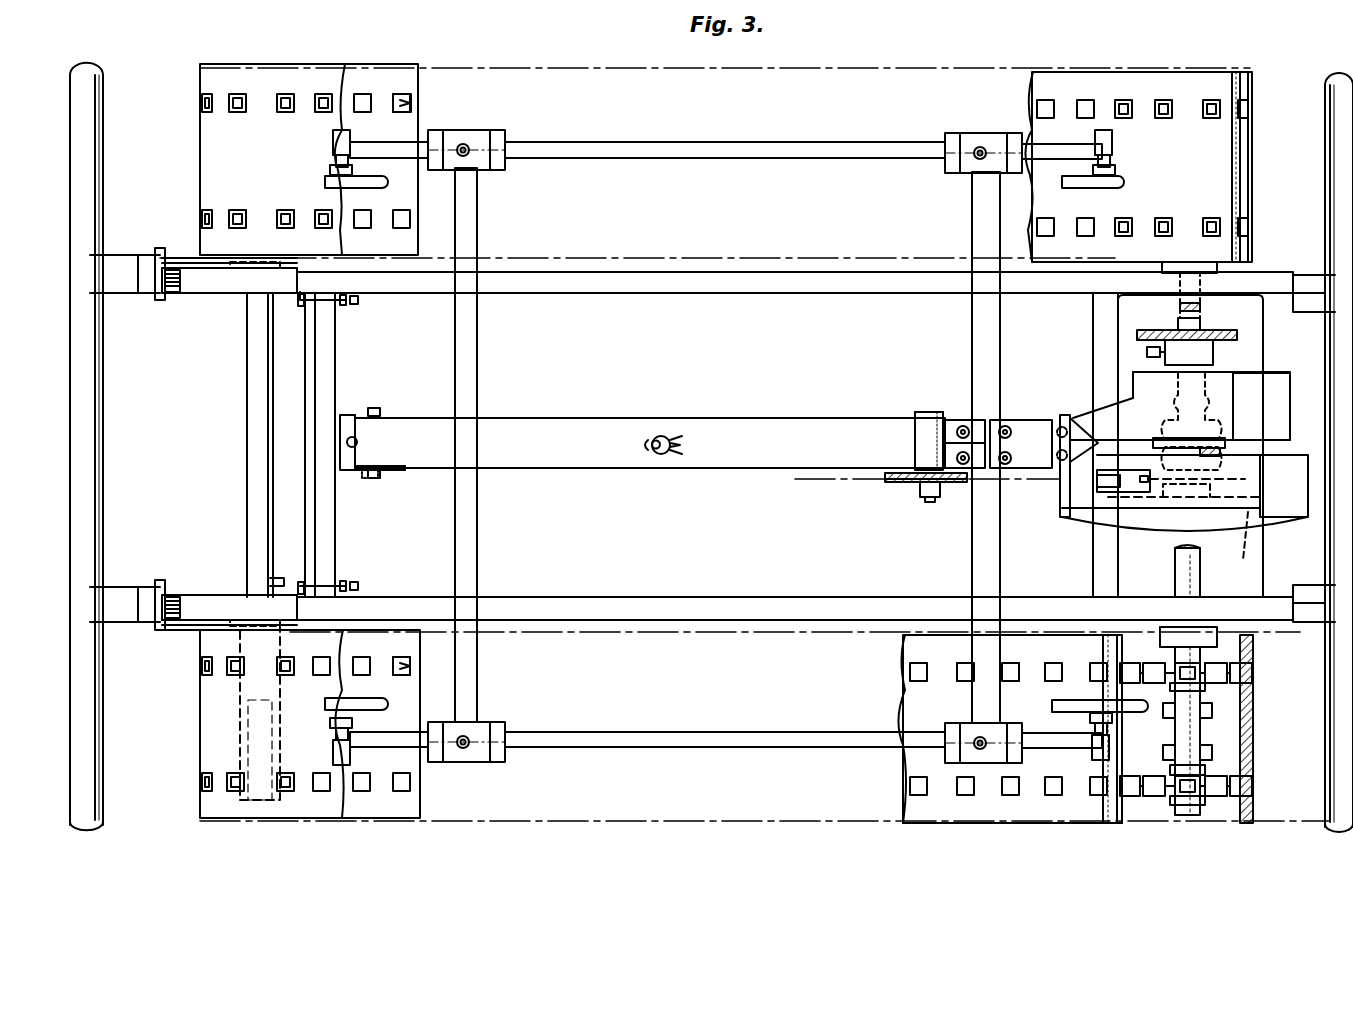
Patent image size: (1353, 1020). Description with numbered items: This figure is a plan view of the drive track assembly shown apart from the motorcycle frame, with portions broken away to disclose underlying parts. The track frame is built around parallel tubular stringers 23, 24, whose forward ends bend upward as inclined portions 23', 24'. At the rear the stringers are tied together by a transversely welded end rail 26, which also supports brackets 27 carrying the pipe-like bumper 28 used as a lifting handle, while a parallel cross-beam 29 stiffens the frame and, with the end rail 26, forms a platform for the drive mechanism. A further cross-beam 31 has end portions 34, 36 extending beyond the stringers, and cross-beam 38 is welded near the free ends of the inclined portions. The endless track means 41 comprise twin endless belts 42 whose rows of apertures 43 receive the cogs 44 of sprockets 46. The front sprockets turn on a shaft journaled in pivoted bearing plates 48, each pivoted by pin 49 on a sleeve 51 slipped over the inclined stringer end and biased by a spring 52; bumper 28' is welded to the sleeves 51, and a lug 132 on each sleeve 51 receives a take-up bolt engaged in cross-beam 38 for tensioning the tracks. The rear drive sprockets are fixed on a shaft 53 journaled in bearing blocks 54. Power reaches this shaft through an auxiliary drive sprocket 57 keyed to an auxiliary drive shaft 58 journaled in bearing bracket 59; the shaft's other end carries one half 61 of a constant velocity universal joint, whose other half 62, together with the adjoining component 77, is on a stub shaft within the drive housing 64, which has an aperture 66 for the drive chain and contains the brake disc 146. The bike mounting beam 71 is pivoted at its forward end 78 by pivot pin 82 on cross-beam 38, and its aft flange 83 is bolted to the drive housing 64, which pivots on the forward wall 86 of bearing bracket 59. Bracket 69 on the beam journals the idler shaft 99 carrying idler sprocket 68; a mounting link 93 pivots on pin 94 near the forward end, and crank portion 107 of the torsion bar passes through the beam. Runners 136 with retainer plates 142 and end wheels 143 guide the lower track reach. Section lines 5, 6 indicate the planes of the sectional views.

The section line 5- 5 is at (1103, 262).
The lower frame portion 6 is at (60, 333).
The stringer 23 is at (795, 302).
The upwardly inclined stringer portion 23' is at (376, 301).
The stringer 24 is at (795, 589).
The upwardly inclined stringer portion 24' is at (376, 578).
The end rail 26 is at (1272, 568).
The brackets 27 is at (1312, 315).
The bumper 28 is at (1314, 452).
The bumper 28' is at (115, 447).
The cross-beam 29 is at (1098, 343).
The cross-beam 31 is at (980, 568).
The end portion 34 is at (978, 211).
The end portion 36 is at (480, 222).
The cross-beam 38 is at (336, 530).
The endless track means 41 is at (1088, 829).
The endless belts 42 is at (390, 77).
The rows of apertures 43 is at (412, 101).
The cogs 44 is at (202, 100).
The sprockets 46 is at (1250, 110).
The bearing plates 48 is at (195, 258).
The pin 49 is at (160, 300).
The sleeve 51 is at (240, 294).
The spring 52 is at (185, 294).
The shaft 53 is at (1180, 300).
The bearing blocks 54 is at (1215, 270).
The auxiliary drive sprocket 57 is at (1215, 340).
The auxiliary drive shaft 58 is at (1198, 320).
The bearing bracket 59 is at (1261, 406).
The universal joint half 61 is at (1160, 430).
The universal joint half 62 is at (1258, 458).
The drive housing 64 is at (1088, 510).
The aperture 66 is at (1088, 500).
The idler sprocket 68 is at (893, 483).
The bracket 69 is at (930, 420).
The bike mounting beam 71 is at (728, 415).
The rod 77 is at (1265, 492).
The forward end 78 is at (445, 418).
The pivot pin 82 is at (358, 442).
The flange 83 is at (1062, 428).
The forward wall 86 is at (1072, 478).
The mounting link 93 is at (388, 472).
The pivot pin 94 is at (372, 478).
The idler shaft 99 is at (930, 497).
The crank portion 107 is at (664, 436).
The lug 132 is at (255, 546).
The runner 136 is at (672, 150).
The retainer plate 142 is at (500, 132).
The wheels 143 is at (390, 182).
The brake disc 146 is at (1233, 536).